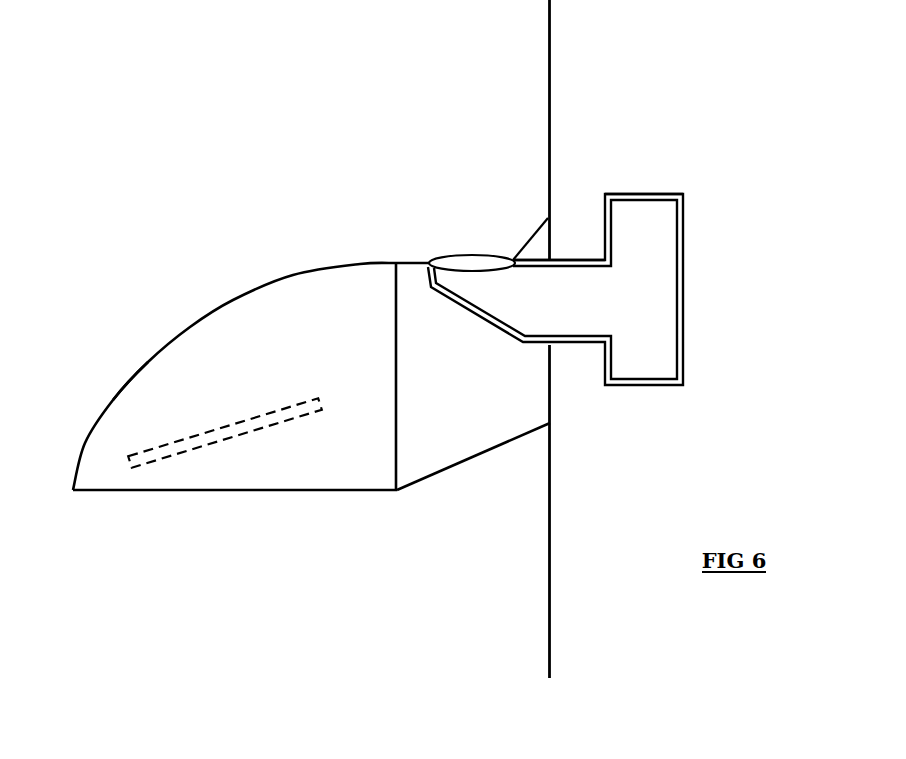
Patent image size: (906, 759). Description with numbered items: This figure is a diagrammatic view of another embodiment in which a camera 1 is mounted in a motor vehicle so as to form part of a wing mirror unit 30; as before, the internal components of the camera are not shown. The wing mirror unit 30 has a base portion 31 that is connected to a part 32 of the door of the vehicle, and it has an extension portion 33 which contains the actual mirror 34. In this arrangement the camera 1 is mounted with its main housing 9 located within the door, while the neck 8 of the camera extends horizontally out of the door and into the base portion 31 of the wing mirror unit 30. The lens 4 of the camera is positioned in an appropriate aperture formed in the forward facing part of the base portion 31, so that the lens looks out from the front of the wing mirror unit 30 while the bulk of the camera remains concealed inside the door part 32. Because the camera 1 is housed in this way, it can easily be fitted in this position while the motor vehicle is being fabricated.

The camera 1 is at (684, 305).
The lens 4 is at (466, 257).
The neck 8 is at (576, 260).
The main housing 9 is at (642, 193).
The wing mirror unit 30 is at (249, 274).
The base portion 31 is at (477, 435).
The part of the door 32 is at (553, 587).
The extension portion 33 is at (148, 362).
The mirror 34 is at (260, 425).